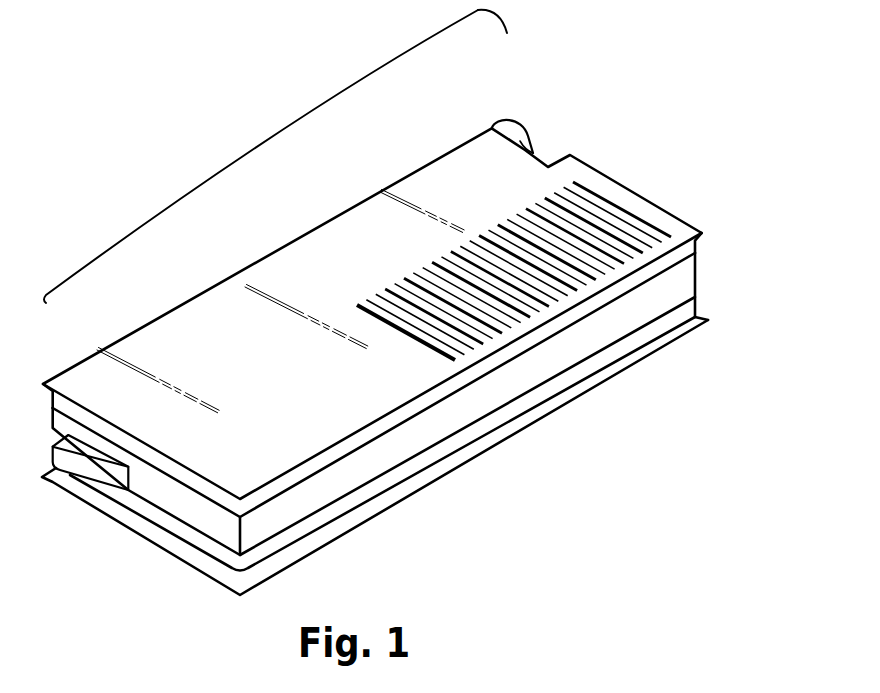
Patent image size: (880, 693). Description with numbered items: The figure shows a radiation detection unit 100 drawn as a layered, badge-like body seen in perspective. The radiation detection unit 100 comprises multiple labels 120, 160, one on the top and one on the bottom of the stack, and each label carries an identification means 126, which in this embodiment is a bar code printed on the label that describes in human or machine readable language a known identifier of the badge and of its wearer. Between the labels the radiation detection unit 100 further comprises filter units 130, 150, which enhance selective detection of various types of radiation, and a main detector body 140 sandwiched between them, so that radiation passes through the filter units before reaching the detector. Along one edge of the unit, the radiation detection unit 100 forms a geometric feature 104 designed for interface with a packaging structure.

The radiation detection unit 100 is at (160, 67).
The geometric feature 104 is at (546, 163).
The label 120 is at (369, 290).
The identification means 126 is at (283, 126).
The filter unit 130 is at (697, 244).
The main detector body 140 is at (697, 279).
The filter unit 150 is at (697, 303).
The label 160 is at (199, 571).